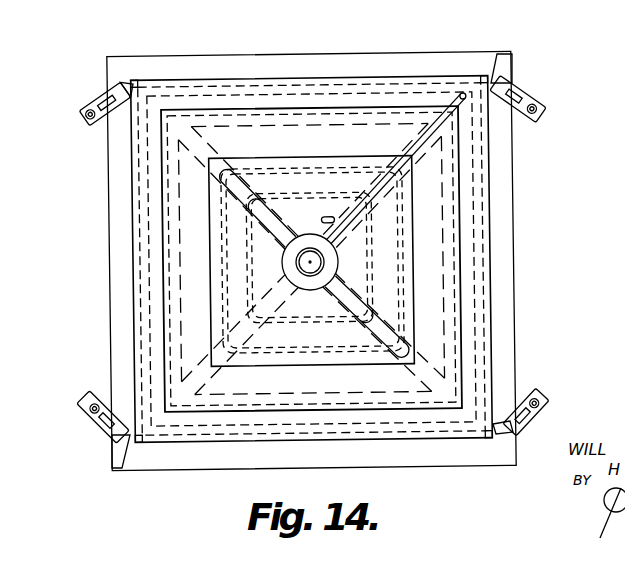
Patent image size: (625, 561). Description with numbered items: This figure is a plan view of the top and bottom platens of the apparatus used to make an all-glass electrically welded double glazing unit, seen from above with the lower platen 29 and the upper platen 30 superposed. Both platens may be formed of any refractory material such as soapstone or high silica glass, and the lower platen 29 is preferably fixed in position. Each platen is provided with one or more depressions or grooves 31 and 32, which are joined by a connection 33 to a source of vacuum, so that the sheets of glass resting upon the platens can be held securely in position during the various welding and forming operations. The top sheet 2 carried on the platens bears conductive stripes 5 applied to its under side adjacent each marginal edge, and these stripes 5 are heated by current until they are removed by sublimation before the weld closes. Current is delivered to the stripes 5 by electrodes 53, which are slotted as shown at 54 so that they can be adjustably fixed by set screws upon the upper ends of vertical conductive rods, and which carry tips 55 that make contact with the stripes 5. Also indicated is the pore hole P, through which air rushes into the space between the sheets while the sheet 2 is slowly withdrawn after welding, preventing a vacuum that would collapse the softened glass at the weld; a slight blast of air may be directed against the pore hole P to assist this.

The sheet 2 is at (135, 256).
The stripes 5 is at (486, 260).
The lower platen 29 is at (514, 290).
The upper platen 30 is at (461, 333).
The groove 31 is at (476, 232).
The groove 32 is at (452, 205).
The connection 33 is at (208, 141).
The pore hole P is at (468, 101).
The electrodes 53 is at (97, 107).
The slots 54 is at (90, 128).
The tips 55 is at (498, 55).